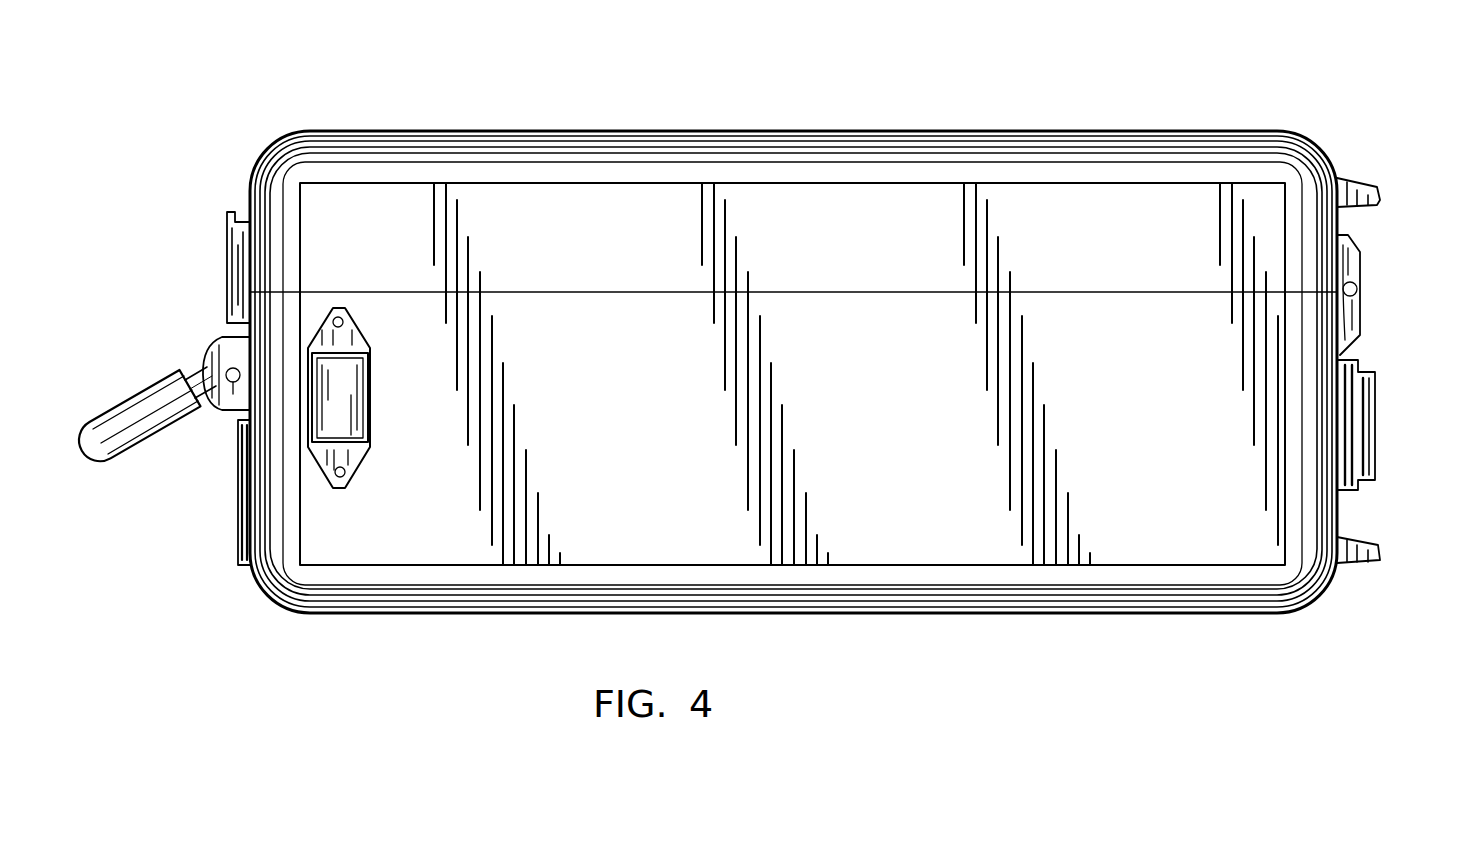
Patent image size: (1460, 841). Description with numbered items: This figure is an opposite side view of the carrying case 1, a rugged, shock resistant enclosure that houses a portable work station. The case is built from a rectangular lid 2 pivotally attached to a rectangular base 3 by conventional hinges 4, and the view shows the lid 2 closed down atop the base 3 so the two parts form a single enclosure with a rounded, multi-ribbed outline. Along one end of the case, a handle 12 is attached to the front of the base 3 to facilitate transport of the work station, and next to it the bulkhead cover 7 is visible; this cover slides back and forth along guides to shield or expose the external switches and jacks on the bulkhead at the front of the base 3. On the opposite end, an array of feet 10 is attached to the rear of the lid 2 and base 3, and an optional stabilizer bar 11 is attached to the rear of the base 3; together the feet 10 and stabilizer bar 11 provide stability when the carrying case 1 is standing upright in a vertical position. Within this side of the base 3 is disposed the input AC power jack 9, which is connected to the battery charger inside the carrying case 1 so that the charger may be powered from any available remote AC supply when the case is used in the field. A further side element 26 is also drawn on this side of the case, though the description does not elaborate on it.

The carrying case 1 is at (480, 97).
The lid 2 is at (277, 137).
The base 3 is at (285, 613).
The hinges 4 is at (1362, 325).
The bulkhead cover 7 is at (238, 518).
The input AC power jack 9 is at (370, 430).
The feet 10 is at (1362, 183).
The stabilizer bar 11 is at (1377, 460).
The handle 12 is at (95, 452).
The side plate 26 is at (228, 272).